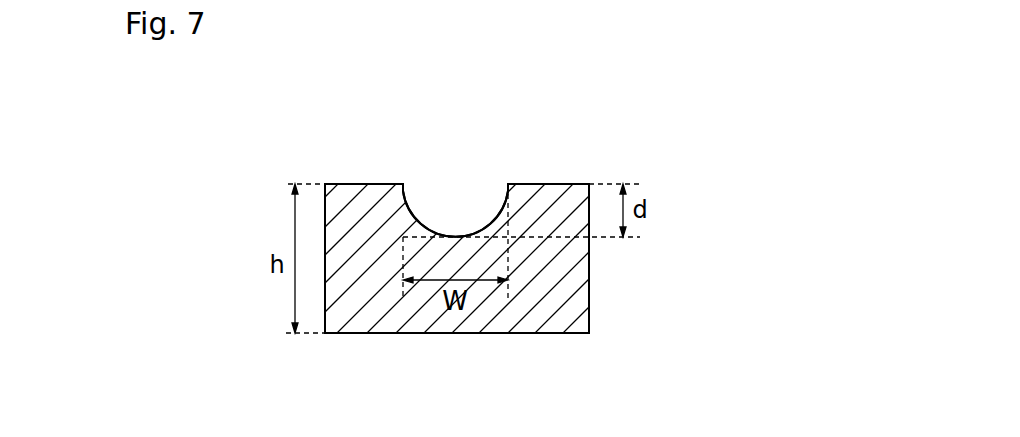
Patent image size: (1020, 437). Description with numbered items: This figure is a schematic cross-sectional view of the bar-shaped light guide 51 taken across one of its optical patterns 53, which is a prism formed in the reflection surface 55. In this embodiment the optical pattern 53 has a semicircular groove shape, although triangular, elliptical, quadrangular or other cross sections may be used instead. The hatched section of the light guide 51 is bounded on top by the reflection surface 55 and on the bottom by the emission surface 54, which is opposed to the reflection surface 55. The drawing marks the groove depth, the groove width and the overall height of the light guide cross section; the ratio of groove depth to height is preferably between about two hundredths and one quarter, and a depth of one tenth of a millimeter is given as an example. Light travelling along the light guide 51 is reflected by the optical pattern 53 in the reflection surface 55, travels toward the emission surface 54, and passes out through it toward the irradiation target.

The light guide 51 is at (667, 127).
The optical pattern 53 is at (428, 198).
The emission surface 54 is at (543, 334).
The reflection surface 55 is at (535, 184).